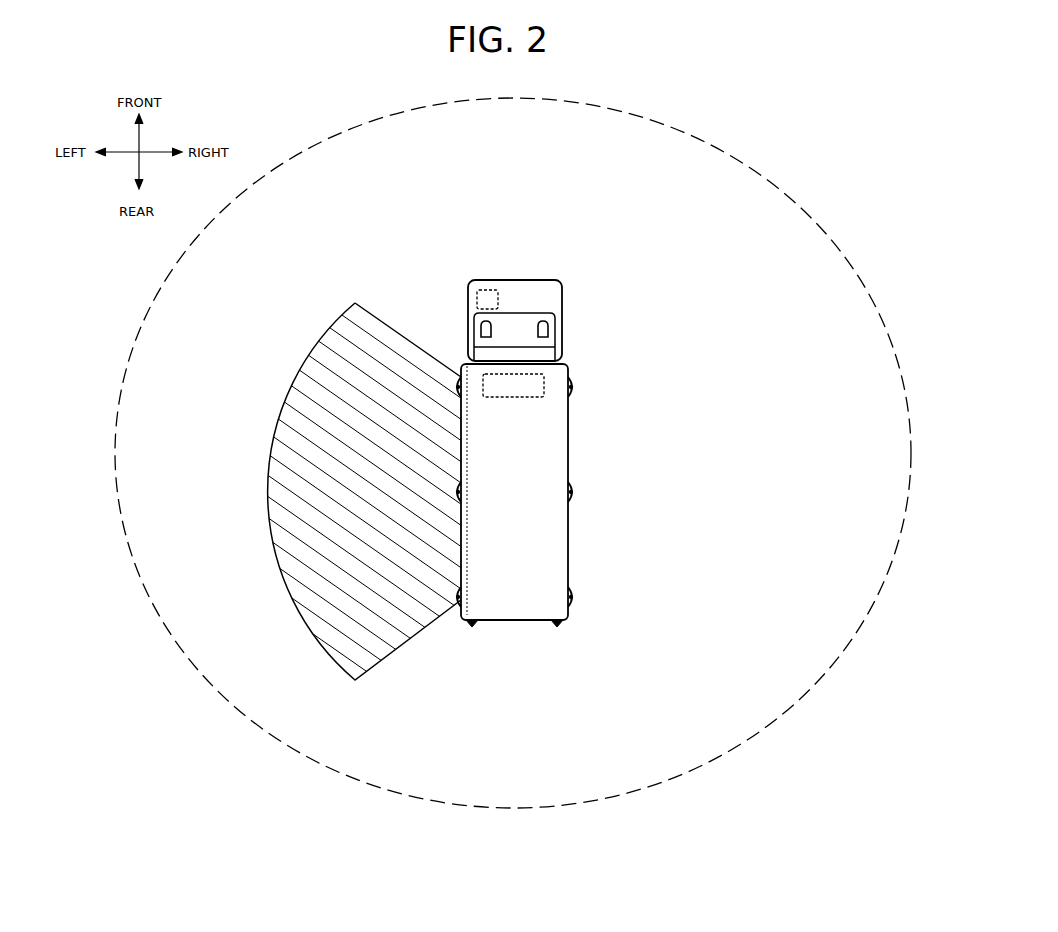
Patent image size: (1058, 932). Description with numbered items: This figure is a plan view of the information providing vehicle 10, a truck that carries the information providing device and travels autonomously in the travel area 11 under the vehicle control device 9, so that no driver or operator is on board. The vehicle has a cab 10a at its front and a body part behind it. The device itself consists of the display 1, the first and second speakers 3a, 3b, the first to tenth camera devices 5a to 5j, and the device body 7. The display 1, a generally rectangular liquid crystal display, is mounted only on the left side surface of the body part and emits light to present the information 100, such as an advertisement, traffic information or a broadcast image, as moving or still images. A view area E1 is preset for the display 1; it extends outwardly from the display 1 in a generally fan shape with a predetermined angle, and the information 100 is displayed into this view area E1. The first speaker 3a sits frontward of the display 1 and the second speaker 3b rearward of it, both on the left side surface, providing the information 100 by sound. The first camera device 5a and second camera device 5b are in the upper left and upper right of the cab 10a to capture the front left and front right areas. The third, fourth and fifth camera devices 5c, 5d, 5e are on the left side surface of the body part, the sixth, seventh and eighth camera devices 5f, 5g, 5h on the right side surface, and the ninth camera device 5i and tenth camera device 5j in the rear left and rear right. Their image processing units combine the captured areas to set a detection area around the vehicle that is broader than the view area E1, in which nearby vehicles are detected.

The display 1 is at (466, 466).
The first speaker 3a is at (458, 362).
The second speaker 3b is at (468, 603).
The first camera device 5a is at (481, 326).
The second camera device 5b is at (552, 326).
The third camera device 5c is at (462, 386).
The fourth camera device 5d is at (462, 492).
The fifth camera device 5e is at (462, 597).
The sixth camera device 5f is at (576, 388).
The seventh camera device 5g is at (576, 493).
The eighth camera device 5h is at (576, 597).
The ninth camera device 5i is at (470, 627).
The tenth camera device 5j is at (558, 627).
The device body 7 is at (535, 391).
The vehicle control device 9 is at (484, 290).
The information providing vehicle 10 is at (567, 276).
The cab 10a is at (521, 283).
The travel area 11 is at (783, 553).
The information 100 is at (296, 533).
The view area E1 is at (270, 440).